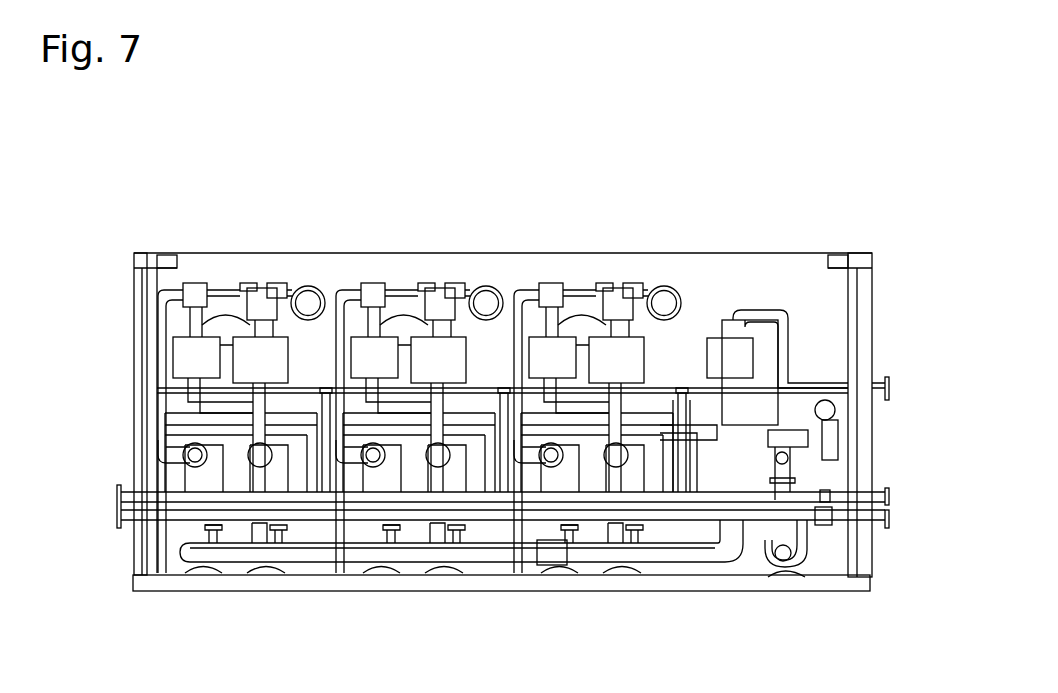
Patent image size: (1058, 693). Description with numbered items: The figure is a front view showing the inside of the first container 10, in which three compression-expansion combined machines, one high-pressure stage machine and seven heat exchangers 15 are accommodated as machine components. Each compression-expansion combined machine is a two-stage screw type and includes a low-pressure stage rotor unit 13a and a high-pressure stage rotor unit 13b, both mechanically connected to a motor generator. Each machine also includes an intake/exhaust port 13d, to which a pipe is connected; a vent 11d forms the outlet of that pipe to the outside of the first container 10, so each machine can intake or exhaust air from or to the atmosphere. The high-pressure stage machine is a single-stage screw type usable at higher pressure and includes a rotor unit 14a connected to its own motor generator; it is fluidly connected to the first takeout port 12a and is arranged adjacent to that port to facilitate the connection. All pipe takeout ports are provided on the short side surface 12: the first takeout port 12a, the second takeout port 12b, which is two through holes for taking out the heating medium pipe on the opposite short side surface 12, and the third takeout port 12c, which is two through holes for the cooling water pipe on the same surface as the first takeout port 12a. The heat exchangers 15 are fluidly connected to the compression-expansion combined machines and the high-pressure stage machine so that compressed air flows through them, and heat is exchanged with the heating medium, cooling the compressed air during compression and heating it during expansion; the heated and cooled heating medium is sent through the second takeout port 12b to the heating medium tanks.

The first container 10 is at (820, 237).
The vent 11d is at (310, 288).
The short side surface 12 is at (134, 368).
The first takeout port 12a is at (873, 378).
The second takeout port 12b is at (119, 485).
The third takeout port 12c is at (873, 491).
The low-pressure stage rotor unit 13a is at (258, 355).
The high-pressure stage rotor unit 13b is at (197, 350).
The intake/exhaust port 13d is at (253, 327).
The rotor unit 14a is at (742, 357).
The heat exchanger 15 is at (268, 548).